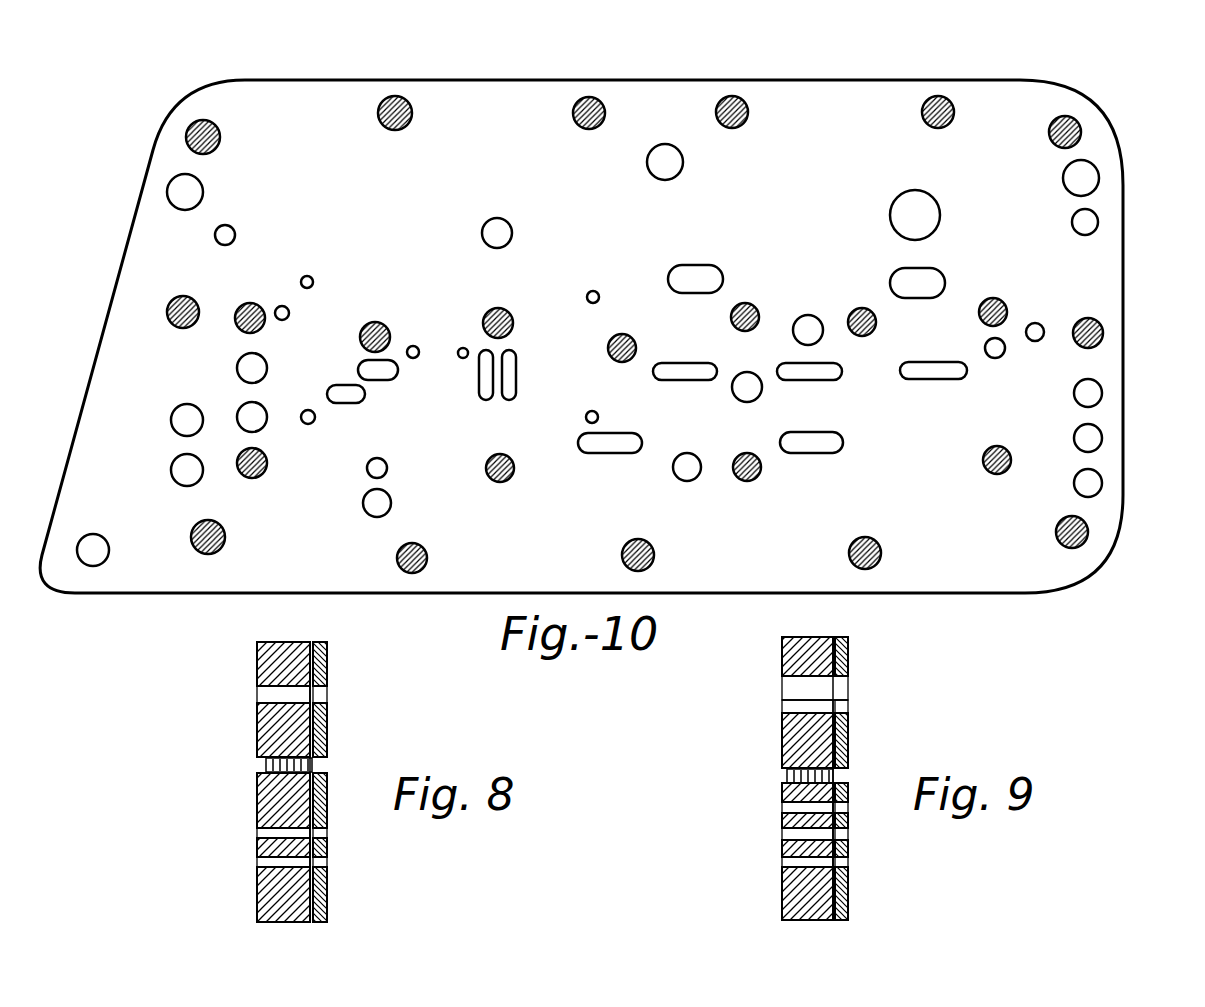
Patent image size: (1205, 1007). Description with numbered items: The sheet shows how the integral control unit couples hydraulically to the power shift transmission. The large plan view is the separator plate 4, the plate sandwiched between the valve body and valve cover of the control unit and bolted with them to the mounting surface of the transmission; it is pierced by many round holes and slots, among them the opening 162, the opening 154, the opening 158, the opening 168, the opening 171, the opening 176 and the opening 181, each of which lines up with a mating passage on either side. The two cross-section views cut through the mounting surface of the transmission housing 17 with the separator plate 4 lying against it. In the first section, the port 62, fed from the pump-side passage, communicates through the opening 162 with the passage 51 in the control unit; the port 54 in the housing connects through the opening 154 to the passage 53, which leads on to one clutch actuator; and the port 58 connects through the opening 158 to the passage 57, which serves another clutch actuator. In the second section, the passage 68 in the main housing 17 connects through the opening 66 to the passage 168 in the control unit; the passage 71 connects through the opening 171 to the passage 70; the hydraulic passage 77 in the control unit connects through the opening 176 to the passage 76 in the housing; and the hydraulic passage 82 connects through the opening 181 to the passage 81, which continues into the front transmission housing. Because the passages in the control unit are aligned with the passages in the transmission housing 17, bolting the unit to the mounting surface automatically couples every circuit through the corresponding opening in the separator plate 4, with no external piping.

In FIG. 10, the separator plate 4 is at (138, 271).
In FIG. 8, the transmission housing 17 is at (262, 660).
In FIG. 9, the transmission housing 17 is at (790, 658).
In FIG. 8, the passage 51 is at (326, 691).
In FIG. 8, the passage 53 is at (318, 832).
In FIG. 8, the port 54 is at (262, 832).
In FIG. 8, the passage 57 is at (326, 862).
In FIG. 8, the port 58 is at (262, 862).
In FIG. 8, the port 62 is at (258, 692).
In FIG. 9, the opening 66 is at (848, 720).
In FIG. 9, the passage 68 is at (784, 703).
In FIG. 9, the passage 70 is at (846, 807).
In FIG. 9, the passage 71 is at (782, 807).
In FIG. 9, the passage 76 is at (782, 833).
In FIG. 9, the hydraulic passage 77 is at (848, 835).
In FIG. 9, the passage 81 is at (782, 862).
In FIG. 9, the hydraulic passage 82 is at (848, 868).
In FIG. 10, the opening 154 is at (180, 417).
In FIG. 8, the opening 154 is at (322, 835).
In FIG. 10, the opening 158 is at (183, 483).
In FIG. 8, the opening 158 is at (322, 868).
In FIG. 10, the opening 162 is at (201, 193).
In FIG. 8, the opening 162 is at (313, 690).
In FIG. 10, the passage 168 is at (1098, 222).
In FIG. 9, the passage 168 is at (850, 705).
In FIG. 10, the opening 171 is at (1101, 394).
In FIG. 9, the opening 171 is at (848, 812).
In FIG. 10, the opening 176 is at (1101, 438).
In FIG. 9, the opening 176 is at (848, 856).
In FIG. 10, the opening 181 is at (1101, 484).
In FIG. 9, the opening 181 is at (790, 890).